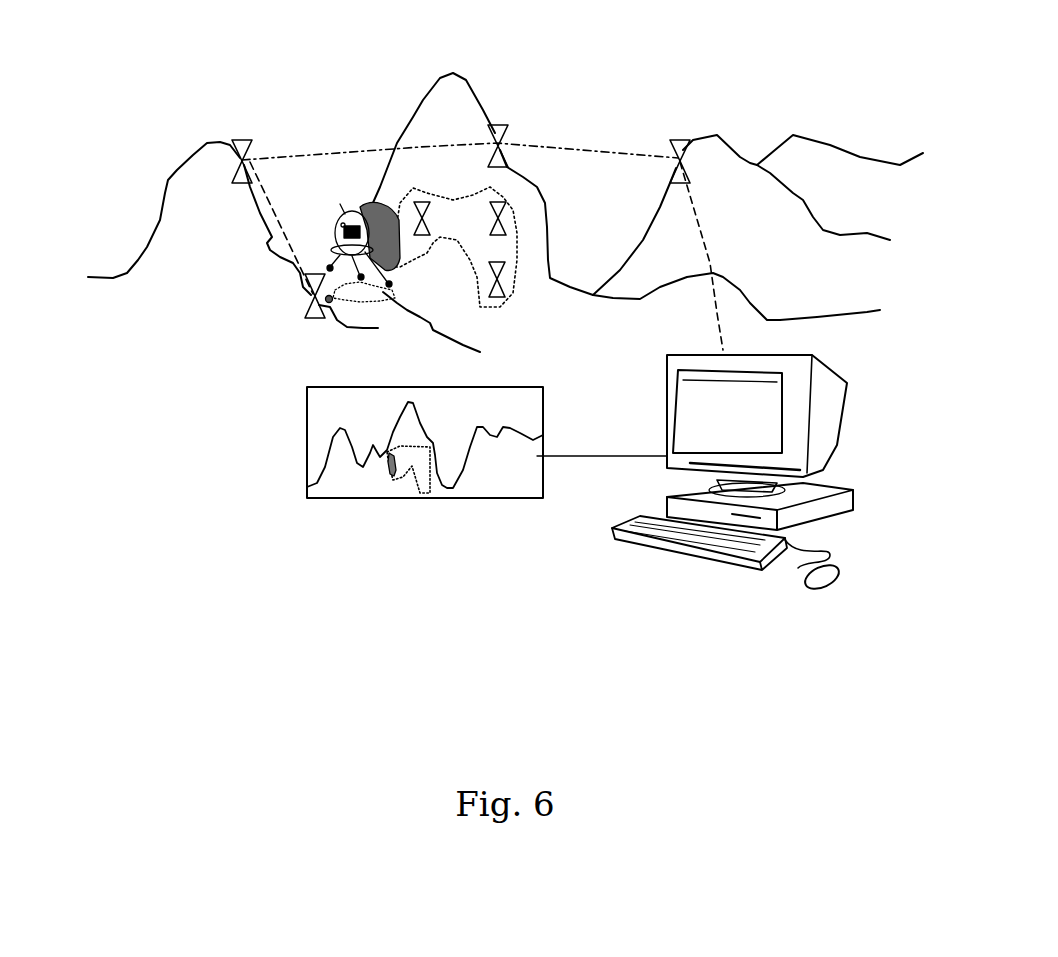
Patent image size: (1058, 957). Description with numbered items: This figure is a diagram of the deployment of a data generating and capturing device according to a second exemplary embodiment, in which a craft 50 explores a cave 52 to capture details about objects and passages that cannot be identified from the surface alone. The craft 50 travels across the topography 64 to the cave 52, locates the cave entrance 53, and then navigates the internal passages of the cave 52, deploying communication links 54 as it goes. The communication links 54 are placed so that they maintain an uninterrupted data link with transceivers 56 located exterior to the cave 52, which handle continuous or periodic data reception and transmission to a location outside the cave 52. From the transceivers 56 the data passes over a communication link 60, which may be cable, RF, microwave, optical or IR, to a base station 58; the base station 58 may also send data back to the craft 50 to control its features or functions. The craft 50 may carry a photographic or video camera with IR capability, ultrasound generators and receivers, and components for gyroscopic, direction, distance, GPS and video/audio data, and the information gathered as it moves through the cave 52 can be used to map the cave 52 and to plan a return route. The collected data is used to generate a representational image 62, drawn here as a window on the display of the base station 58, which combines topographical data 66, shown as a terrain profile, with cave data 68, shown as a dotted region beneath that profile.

The craft 50 is at (353, 223).
The cave 52 is at (473, 217).
The cave entrance 53 is at (382, 207).
The deployable communication links 54 is at (497, 235).
The transceivers 56 is at (295, 277).
The base station 58 is at (717, 412).
The communication link 60 is at (715, 263).
The representational images 62 is at (308, 425).
The topography 64 is at (160, 233).
The topographical data 66 is at (325, 487).
The cave data 68 is at (417, 458).